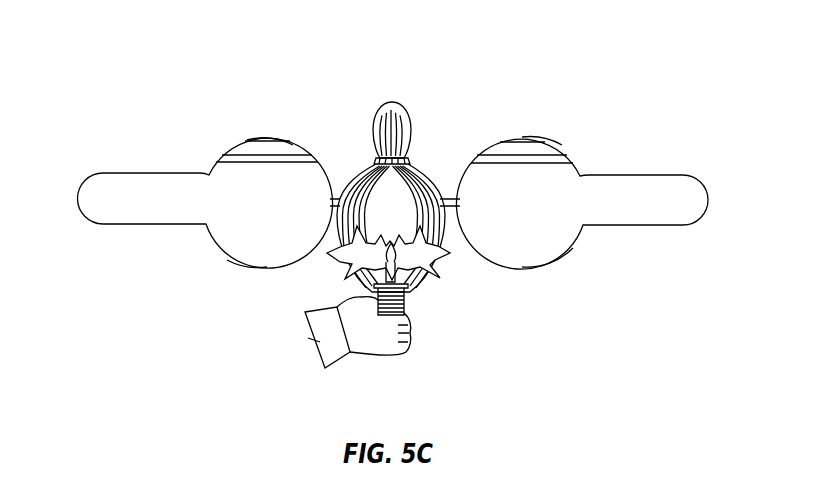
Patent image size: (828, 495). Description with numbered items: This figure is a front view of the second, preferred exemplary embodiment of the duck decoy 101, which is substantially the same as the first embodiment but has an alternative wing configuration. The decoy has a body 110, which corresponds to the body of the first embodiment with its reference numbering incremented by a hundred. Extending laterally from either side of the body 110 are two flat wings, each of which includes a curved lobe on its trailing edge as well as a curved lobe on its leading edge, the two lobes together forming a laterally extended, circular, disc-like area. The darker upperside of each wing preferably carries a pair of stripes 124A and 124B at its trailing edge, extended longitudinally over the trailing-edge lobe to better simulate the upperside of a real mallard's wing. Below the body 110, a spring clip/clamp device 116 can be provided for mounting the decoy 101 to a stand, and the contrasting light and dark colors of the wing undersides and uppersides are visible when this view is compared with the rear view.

The duck decoy 101 is at (462, 101).
The body 110 is at (417, 160).
The spring clip/clamp device 116 is at (410, 300).
The stripe 124A is at (252, 139).
The stripe 124B is at (233, 152).